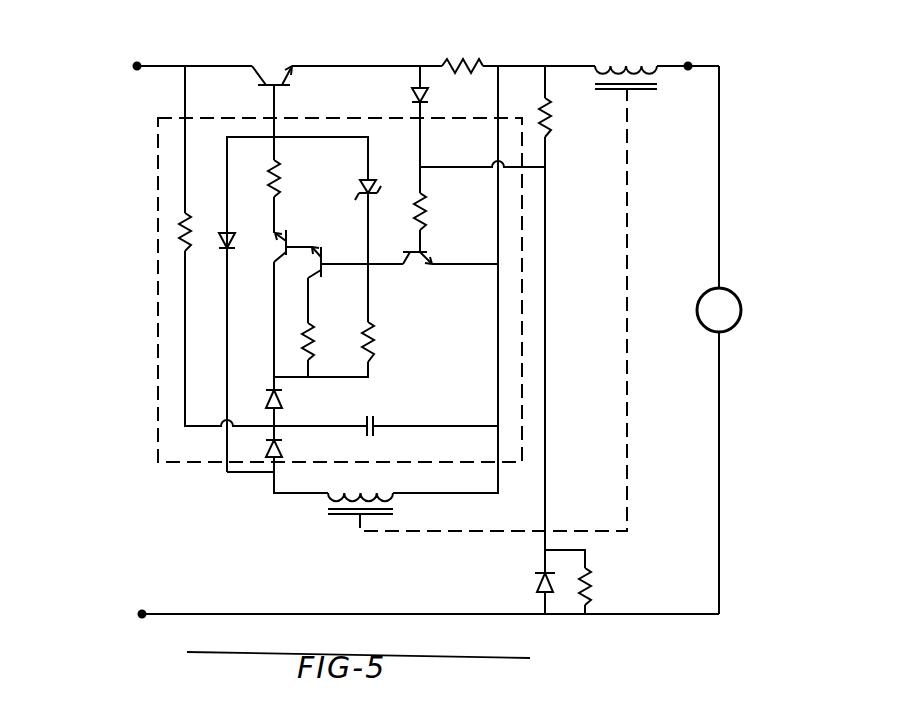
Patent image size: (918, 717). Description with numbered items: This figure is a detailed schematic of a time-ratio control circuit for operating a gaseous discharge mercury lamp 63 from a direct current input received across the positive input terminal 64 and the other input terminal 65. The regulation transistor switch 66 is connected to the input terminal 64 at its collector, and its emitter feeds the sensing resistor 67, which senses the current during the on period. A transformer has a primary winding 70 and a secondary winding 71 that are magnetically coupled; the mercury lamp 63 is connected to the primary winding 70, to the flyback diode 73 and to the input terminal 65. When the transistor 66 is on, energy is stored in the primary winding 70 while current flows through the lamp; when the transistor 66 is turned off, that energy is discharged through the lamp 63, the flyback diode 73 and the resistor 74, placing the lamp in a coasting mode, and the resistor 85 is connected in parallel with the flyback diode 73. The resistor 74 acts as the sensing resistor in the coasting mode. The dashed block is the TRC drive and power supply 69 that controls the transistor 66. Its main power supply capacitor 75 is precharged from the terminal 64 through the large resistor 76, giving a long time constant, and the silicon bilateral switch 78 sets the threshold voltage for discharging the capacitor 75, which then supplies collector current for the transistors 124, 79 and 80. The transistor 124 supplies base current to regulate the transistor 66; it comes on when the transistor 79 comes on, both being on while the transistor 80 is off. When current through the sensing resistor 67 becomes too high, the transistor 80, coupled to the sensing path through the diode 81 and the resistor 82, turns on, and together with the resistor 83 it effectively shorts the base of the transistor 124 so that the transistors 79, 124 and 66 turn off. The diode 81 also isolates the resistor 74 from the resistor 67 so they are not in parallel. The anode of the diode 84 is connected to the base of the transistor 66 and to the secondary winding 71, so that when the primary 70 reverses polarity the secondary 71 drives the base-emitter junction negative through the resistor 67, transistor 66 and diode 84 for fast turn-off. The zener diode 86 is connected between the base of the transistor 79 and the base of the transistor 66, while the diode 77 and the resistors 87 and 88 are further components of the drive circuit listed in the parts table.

The mercury lamp 63 is at (736, 300).
The input terminal 64 is at (136, 64).
The input terminal 65 is at (141, 617).
The regulation transistor switch 66 is at (266, 80).
The sensing resistor 67 is at (458, 60).
The TRC drive and power supply 69 is at (158, 170).
The primary winding 70 is at (612, 66).
The secondary winding 71 is at (365, 493).
The flyback diode 73 is at (535, 584).
The resistor 74 is at (550, 120).
The capacitor 75 is at (378, 428).
The resistor 76 is at (186, 224).
The diode 77 is at (282, 450).
The silicon bilateral switch 78 is at (282, 400).
The transistor 79 is at (323, 258).
The transistor 80 is at (428, 250).
The diode 81 is at (415, 93).
The resistor 82 is at (428, 210).
The resistor 83 is at (378, 352).
The diode 84 is at (231, 238).
The resistor 85 is at (590, 586).
The zener diode 86 is at (372, 180).
The resistor 87 is at (282, 182).
The resistor 88 is at (312, 348).
The transistor 124 is at (288, 240).